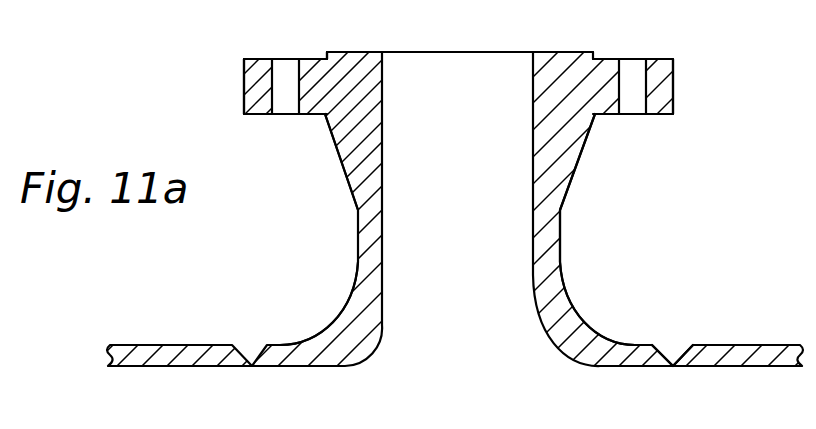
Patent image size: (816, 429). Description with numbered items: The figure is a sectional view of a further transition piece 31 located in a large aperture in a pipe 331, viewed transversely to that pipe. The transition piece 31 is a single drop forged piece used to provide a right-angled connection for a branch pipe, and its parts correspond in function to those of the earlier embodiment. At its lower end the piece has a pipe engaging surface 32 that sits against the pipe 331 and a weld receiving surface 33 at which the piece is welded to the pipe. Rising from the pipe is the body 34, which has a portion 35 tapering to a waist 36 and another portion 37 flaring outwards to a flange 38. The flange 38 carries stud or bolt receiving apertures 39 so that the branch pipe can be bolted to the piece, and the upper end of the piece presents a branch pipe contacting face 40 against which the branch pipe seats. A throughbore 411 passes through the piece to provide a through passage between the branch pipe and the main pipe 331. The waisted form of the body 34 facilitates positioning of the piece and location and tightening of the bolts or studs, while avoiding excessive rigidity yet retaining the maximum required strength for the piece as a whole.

The transition piece 31 is at (322, 222).
The pipe engaging surface 32 is at (673, 367).
The weld receiving surface 33 is at (672, 354).
The pipe 331 is at (140, 366).
The body 34 is at (567, 189).
The tapering portion 35 is at (352, 296).
The waist 36 is at (562, 228).
The flaring portion 37 is at (338, 155).
The flange 38 is at (244, 87).
The stud or bolt receiving aperture 39 is at (282, 60).
The branch pipe contacting face 40 is at (350, 52).
The throughbore 411 is at (468, 86).